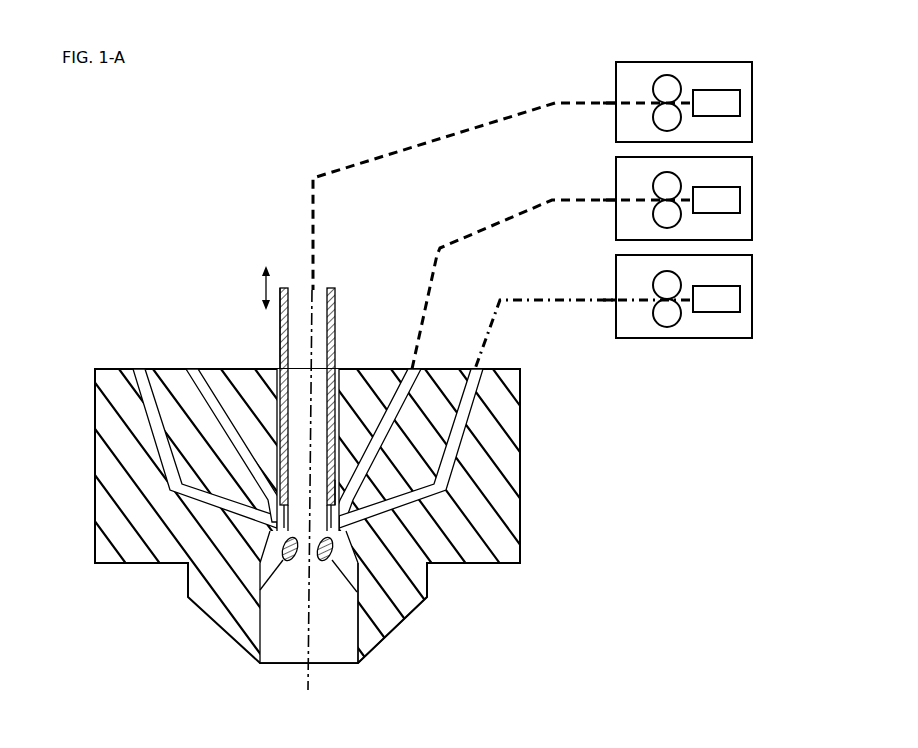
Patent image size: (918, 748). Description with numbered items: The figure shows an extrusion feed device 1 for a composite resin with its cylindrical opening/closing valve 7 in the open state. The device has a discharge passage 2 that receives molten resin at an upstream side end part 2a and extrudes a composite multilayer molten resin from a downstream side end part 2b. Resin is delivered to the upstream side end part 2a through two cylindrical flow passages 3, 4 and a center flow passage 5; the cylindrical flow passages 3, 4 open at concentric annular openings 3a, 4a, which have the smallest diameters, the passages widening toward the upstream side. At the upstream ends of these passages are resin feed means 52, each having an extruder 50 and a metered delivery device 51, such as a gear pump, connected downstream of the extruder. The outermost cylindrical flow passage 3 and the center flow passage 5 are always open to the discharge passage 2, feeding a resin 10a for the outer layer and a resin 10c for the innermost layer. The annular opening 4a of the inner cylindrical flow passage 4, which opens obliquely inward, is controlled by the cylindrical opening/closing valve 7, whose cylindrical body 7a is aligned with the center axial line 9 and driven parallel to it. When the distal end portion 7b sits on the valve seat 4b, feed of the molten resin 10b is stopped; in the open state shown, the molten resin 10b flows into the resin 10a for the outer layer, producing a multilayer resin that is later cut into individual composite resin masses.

The extrusion feed device 1 is at (218, 635).
The discharge passage 2 is at (328, 623).
The upstream side end part 2a is at (363, 563).
The downstream side end part 2b is at (280, 665).
The cylindrical flow passage 3 is at (412, 509).
The annular opening 3a is at (427, 583).
The cylindrical flow passage 4 is at (377, 463).
The annular opening 4a is at (352, 560).
The valve seat 4b is at (277, 527).
The center flow passage 5 is at (330, 382).
The cylindrical opening/closing valve 7 is at (338, 300).
The cylindrical body 7a is at (279, 352).
The distal end portion 7b is at (336, 530).
The center axial line 9 is at (310, 640).
The resin for outer layer 10a is at (520, 285).
The molten resin for inner layer 10b is at (285, 556).
The resin for innermost layer 10c is at (376, 141).
The extruder 50 is at (725, 97).
The metered delivery device 51 is at (665, 83).
The resin feed means 52 is at (752, 122).